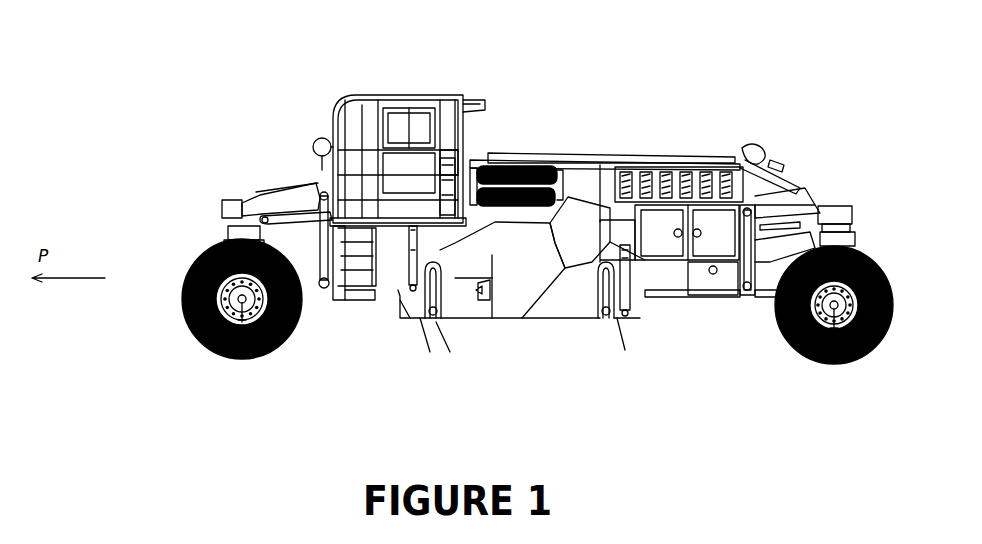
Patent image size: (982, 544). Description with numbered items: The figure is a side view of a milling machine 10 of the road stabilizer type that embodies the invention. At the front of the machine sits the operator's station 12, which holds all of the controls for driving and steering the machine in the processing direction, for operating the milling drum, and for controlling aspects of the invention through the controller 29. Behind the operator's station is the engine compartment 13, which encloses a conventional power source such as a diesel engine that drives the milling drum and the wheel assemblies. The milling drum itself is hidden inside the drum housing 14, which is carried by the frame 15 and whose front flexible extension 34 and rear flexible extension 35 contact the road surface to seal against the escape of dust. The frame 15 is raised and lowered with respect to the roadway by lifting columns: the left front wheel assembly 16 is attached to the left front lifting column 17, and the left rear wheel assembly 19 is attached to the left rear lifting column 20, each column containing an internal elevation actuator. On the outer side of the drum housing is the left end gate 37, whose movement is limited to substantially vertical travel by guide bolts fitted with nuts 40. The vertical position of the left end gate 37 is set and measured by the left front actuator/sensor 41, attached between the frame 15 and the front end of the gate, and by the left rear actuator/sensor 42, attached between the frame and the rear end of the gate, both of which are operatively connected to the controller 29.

The milling machine 10 is at (655, 70).
The operator's station 12 is at (442, 86).
The engine compartment 13 is at (723, 149).
The drum housing 14 is at (526, 170).
The frame 15 is at (386, 300).
The left front wheel assembly 16 is at (191, 239).
The left front lifting column 17 is at (212, 226).
The left rear wheel assembly 19 is at (890, 248).
The left rear lifting column 20 is at (868, 240).
The controller 29 is at (456, 152).
The front flexible extension 34 is at (412, 344).
The rear flexible extension 35 is at (637, 337).
The left end gate 37 is at (578, 309).
The nuts 40 is at (437, 325).
The left front actuator/sensor 41 is at (402, 263).
The left rear actuator/sensor 42 is at (638, 309).